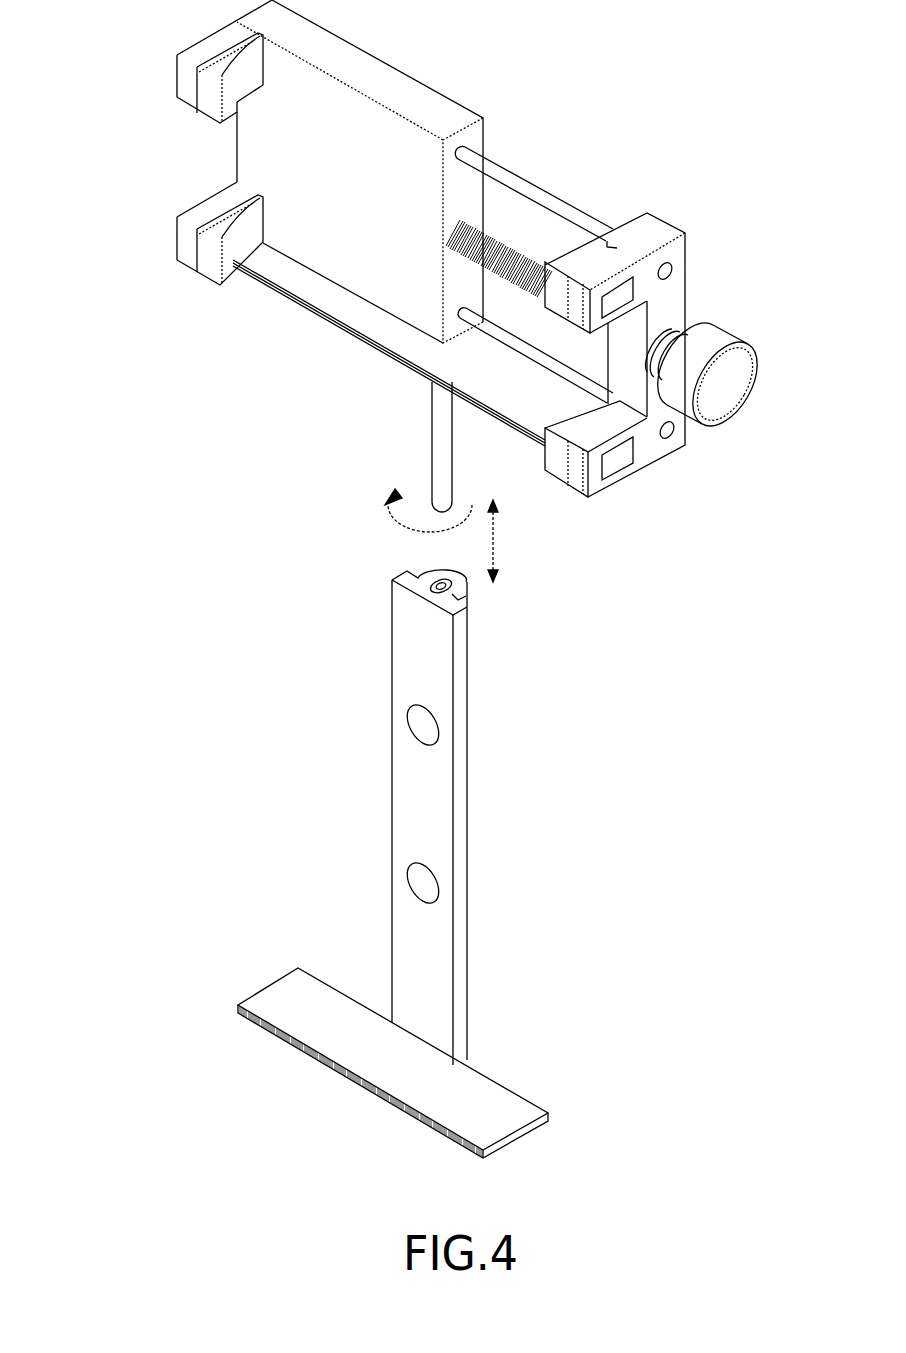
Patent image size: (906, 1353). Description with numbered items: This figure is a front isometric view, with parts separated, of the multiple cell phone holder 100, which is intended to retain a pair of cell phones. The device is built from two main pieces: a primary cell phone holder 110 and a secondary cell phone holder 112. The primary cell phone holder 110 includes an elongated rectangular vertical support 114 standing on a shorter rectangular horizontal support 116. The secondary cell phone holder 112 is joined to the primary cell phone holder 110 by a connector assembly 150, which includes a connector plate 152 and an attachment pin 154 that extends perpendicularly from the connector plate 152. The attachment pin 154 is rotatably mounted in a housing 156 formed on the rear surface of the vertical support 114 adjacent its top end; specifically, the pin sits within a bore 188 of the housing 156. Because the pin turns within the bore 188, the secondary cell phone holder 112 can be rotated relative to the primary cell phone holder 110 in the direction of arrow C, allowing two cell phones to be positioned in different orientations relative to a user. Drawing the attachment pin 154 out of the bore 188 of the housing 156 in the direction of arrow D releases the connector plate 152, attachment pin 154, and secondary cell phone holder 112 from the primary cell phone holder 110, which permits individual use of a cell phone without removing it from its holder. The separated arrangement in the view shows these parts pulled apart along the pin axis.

The multiple cell phone holder 100 is at (153, 550).
The primary cell phone holder 110 is at (307, 810).
The secondary cell phone holder 112 is at (485, 77).
The vertical support 114 is at (458, 807).
The horizontal support 116 is at (497, 1095).
The connector assembly 150 is at (310, 412).
The connector plate 152 is at (325, 305).
The attachment pin 154 is at (440, 427).
The housing 156 is at (462, 587).
The bore 188 is at (432, 587).